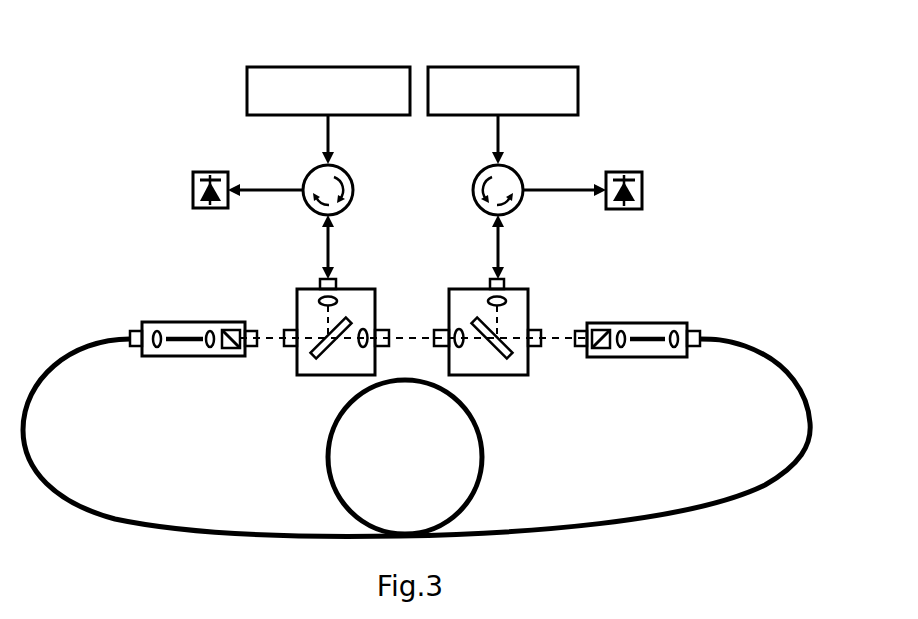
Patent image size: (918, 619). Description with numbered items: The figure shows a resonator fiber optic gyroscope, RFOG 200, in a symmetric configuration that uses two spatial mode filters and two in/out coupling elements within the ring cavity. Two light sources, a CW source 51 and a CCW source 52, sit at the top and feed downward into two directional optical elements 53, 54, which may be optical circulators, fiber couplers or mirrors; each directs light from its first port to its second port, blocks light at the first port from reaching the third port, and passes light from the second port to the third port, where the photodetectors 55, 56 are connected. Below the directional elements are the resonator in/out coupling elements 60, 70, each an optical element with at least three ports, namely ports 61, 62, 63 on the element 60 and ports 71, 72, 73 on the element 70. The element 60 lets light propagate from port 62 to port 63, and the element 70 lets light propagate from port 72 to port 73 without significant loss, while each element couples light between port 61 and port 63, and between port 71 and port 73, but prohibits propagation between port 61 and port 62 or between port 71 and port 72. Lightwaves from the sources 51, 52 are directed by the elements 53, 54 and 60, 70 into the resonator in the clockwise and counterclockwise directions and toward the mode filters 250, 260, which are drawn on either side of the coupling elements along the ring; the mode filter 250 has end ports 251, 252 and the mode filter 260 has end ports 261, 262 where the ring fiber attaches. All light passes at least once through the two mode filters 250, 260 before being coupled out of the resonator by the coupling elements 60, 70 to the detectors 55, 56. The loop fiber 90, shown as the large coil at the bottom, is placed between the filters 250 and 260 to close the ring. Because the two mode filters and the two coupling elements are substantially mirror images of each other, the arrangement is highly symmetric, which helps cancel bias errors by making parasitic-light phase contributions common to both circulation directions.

The RFOG 200 is at (734, 124).
The light source 51 is at (488, 67).
The light source 52 is at (357, 67).
The directional optical element 53 is at (478, 178).
The directional optical element 54 is at (353, 180).
The photodetector 55 is at (642, 190).
The photodetector 56 is at (193, 184).
The resonator in/out coupling element 60 is at (530, 298).
The port 61 is at (490, 285).
The port 62 is at (438, 330).
The port 63 is at (538, 347).
The resonator in/out coupling element 70 is at (297, 295).
The port 71 is at (333, 285).
The port 72 is at (385, 330).
The port 73 is at (285, 350).
The fiber loop 90 is at (440, 392).
The mode filter 250 is at (627, 323).
The polarizer assembly port 251 is at (578, 348).
The polarizer assembly port 252 is at (695, 350).
The mode filter 260 is at (191, 322).
The polarizer assembly port 261 is at (253, 350).
The polarizer assembly port 262 is at (136, 348).